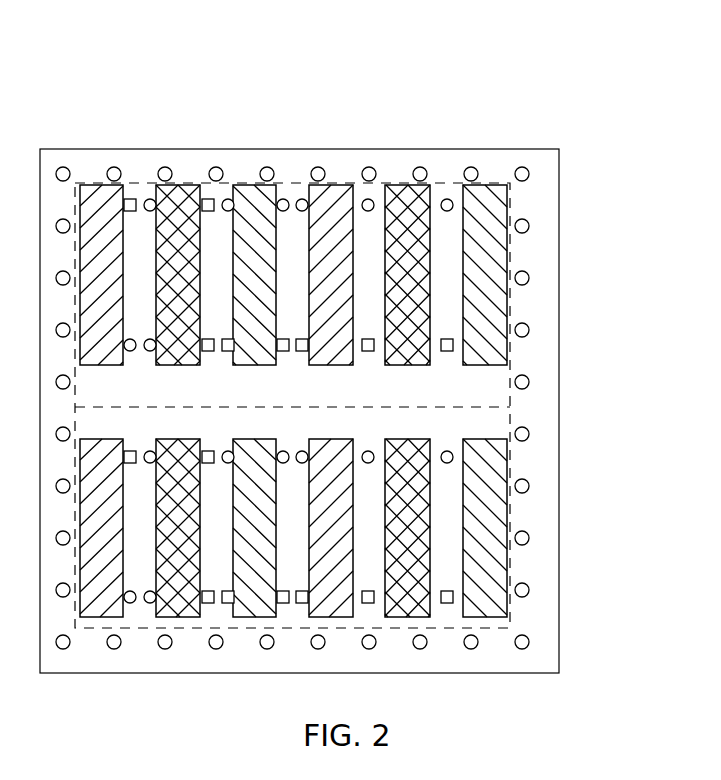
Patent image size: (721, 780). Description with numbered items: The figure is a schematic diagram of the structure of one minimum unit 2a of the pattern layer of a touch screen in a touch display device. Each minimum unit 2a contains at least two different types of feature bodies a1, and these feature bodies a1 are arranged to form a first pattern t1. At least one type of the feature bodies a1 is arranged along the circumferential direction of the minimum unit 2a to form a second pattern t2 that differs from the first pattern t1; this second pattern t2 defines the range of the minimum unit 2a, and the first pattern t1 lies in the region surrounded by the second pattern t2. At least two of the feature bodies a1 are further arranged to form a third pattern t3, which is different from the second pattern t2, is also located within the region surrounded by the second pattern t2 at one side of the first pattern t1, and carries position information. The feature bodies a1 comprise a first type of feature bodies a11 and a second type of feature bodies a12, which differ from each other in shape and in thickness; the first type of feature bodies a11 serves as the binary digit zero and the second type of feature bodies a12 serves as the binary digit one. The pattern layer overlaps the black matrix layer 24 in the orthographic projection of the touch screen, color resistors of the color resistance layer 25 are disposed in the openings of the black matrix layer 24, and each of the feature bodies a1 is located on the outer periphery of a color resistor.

The minimum unit 2a is at (668, 129).
The second pattern t2 is at (142, 158).
The third pattern t3 is at (443, 262).
The first pattern t1 is at (448, 522).
The black matrix layer 24 is at (545, 390).
The color resistance layer 25 is at (337, 197).
The feature bodies a1 is at (217, 121).
The second type of feature bodies a12 is at (202, 200).
The first type of feature bodies a11 is at (229, 199).